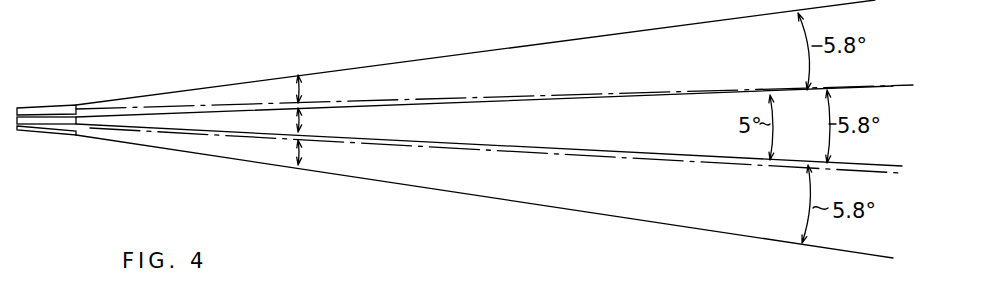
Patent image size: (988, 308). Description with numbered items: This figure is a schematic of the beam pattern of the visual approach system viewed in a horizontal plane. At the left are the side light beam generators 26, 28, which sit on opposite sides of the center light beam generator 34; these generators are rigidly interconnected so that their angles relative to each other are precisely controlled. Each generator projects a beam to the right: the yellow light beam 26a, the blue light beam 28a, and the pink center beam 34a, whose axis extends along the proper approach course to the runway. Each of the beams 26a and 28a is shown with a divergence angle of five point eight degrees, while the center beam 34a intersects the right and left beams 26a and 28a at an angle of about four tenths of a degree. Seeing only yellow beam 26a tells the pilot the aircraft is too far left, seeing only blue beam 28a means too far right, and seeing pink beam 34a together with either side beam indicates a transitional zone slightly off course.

The light beam generator 26 is at (30, 130).
The light beam generator 28 is at (53, 105).
The center light beam generator 34 is at (63, 122).
The light beam 26a is at (302, 152).
The light beam 28a is at (302, 89).
The center light beam 34a is at (302, 120).